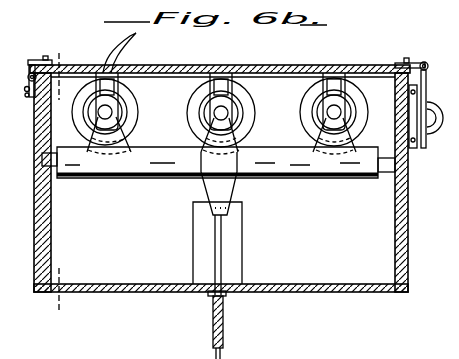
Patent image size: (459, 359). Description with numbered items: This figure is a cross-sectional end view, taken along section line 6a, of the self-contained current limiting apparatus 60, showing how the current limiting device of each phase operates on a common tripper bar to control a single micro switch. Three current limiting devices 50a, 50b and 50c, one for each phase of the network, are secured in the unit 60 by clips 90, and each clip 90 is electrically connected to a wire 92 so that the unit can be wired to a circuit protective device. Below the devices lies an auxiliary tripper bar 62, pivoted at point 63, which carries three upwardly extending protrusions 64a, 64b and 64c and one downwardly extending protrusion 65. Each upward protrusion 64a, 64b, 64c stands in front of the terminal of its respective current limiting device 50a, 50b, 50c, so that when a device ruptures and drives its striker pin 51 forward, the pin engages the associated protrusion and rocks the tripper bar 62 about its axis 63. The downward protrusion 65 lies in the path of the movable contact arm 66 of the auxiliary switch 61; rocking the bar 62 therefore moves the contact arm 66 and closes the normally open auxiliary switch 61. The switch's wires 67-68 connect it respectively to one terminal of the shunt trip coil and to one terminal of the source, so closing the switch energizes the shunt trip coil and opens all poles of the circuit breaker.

The current limiting apparatus 60 is at (346, 66).
The wire 92 is at (118, 53).
The section line 6a- 6a is at (59, 53).
The clip 90 is at (120, 80).
The current limiting device 50c is at (138, 103).
The current limiting device 50b is at (246, 104).
The current limiting device 50a is at (302, 122).
The striker pin 51 is at (243, 115).
The upwardly extending protrusion 64c is at (127, 141).
The upwardly extending protrusion 64b is at (210, 148).
The upwardly extending protrusion 64a is at (312, 148).
The auxiliary tripper bar 62 is at (146, 180).
The pivot point 63 is at (52, 152).
The downwardly extending protrusion 65 is at (232, 194).
The auxiliary switch 61 is at (240, 271).
The movable contact arm 66 is at (214, 257).
The wires 67-68 is at (229, 337).